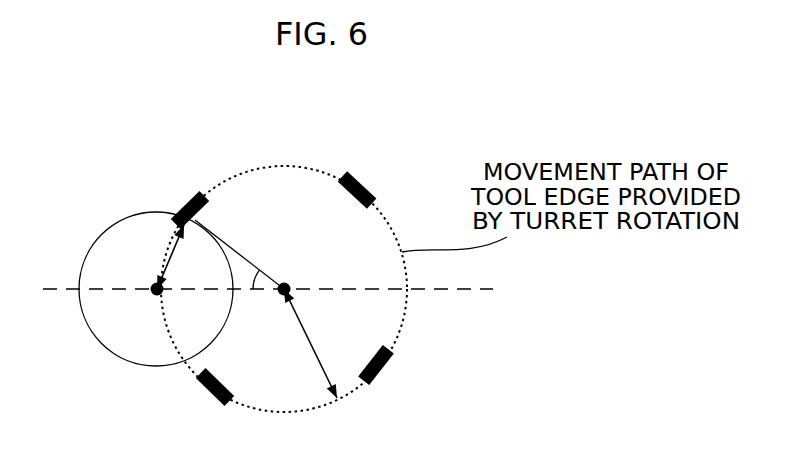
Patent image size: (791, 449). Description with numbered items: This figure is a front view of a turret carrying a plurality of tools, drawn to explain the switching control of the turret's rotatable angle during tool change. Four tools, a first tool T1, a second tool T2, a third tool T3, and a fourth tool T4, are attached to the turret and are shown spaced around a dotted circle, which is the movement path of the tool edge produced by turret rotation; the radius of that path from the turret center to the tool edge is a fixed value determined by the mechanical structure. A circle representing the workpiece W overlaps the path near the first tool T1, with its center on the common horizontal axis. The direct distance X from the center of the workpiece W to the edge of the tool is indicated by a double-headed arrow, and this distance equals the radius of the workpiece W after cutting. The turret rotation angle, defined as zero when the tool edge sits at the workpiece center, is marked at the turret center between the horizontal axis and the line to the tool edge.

The workpiece W is at (113, 272).
The first tool T1 is at (186, 208).
The second tool T2 is at (368, 185).
The third tool T3 is at (390, 370).
The fourth tool T4 is at (205, 397).
The direct distance from the center of the workpiece to the edge of the tool X is at (180, 254).